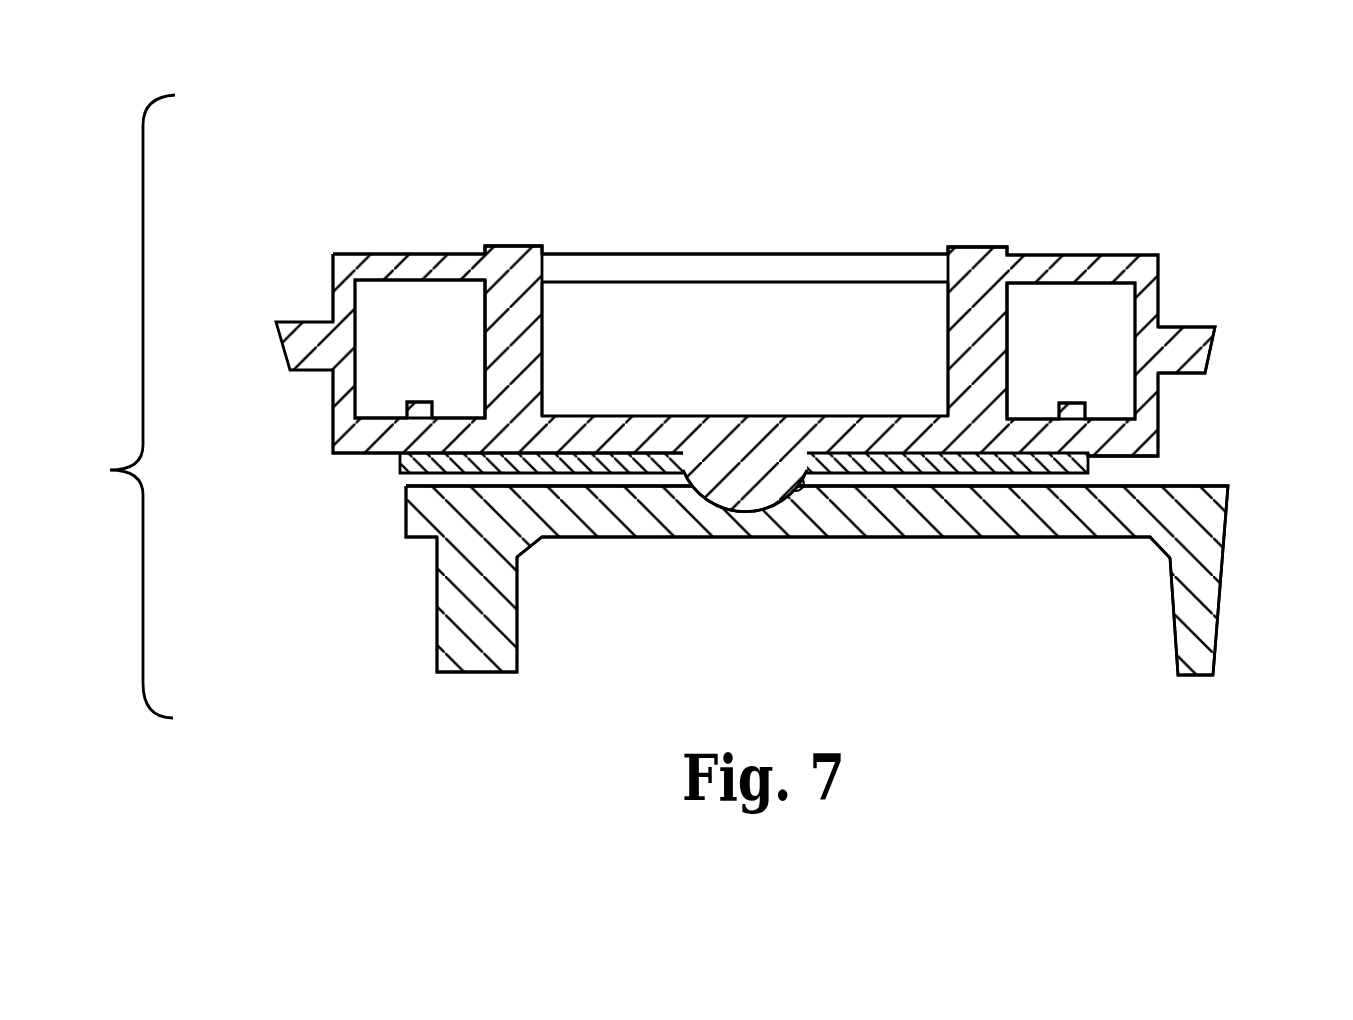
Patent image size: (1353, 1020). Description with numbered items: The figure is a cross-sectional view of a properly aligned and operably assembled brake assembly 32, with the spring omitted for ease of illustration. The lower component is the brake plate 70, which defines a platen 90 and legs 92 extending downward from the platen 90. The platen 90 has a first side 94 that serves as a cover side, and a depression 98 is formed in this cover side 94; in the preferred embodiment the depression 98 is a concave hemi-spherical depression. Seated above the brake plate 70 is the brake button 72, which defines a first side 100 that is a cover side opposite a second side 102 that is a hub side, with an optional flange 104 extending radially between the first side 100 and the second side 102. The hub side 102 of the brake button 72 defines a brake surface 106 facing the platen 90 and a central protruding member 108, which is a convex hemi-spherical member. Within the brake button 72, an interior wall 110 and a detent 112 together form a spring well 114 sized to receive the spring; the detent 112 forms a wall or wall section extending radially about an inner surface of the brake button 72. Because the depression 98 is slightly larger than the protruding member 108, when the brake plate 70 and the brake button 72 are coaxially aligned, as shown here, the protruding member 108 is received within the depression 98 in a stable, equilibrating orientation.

The brake assembly 32 is at (121, 406).
The brake plate 70 is at (346, 603).
The brake button 72 is at (288, 259).
The platen 90 is at (976, 520).
The legs 92 is at (437, 640).
The first side 94 is at (1207, 490).
The depression 98 is at (803, 480).
The first side 100 is at (1143, 257).
The second side 102 is at (1143, 462).
The flange 104 is at (1190, 333).
The brake surface 106 is at (400, 462).
The protruding member 108 is at (732, 499).
The interior wall 110 is at (546, 318).
The detent 112 is at (408, 400).
The spring well 114 is at (459, 380).